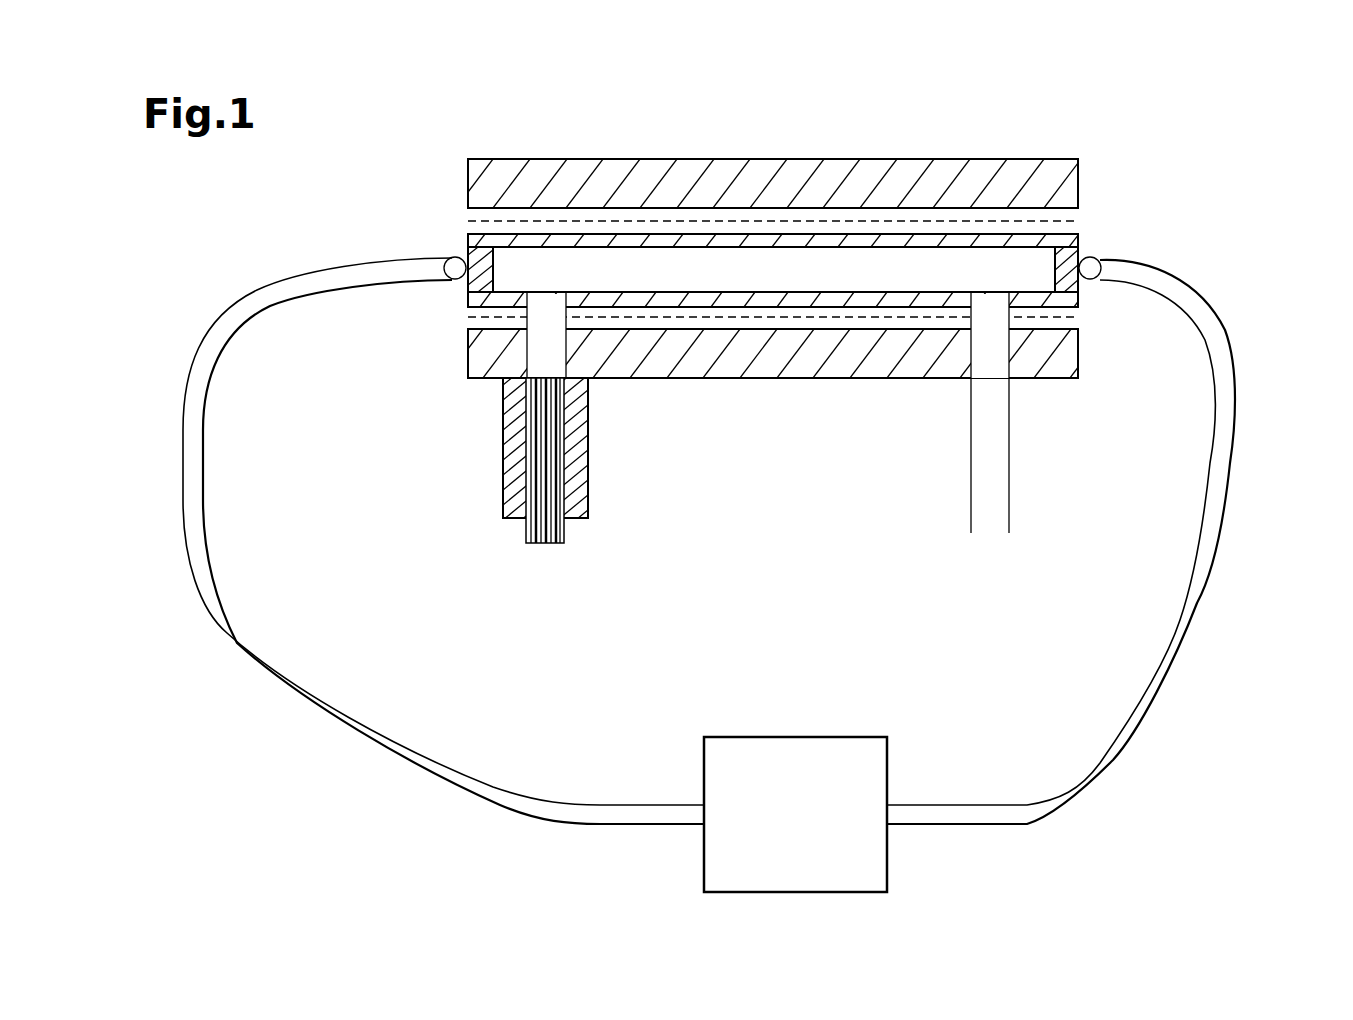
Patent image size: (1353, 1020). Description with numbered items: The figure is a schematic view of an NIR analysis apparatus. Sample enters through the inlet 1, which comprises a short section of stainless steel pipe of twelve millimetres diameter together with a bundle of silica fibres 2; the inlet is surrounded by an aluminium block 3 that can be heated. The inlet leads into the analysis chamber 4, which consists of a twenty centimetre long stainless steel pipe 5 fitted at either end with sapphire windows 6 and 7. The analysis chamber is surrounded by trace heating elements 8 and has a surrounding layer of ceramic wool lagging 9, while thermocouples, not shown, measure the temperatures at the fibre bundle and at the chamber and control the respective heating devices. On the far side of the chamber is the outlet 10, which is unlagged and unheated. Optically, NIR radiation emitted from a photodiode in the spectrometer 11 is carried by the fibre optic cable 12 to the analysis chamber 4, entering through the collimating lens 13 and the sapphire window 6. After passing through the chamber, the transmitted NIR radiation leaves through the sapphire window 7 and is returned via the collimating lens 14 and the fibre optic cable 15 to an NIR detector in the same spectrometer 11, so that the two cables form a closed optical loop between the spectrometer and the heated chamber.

The inlet 1 is at (491, 467).
The bundle of silica fibres 2 is at (548, 513).
The aluminium block 3 is at (582, 472).
The analysis chamber 4 is at (737, 150).
The stainless steel pipe 5 is at (813, 240).
The sapphire window 6 is at (470, 247).
The sapphire window 7 is at (1067, 260).
The trace heating elements 8 is at (868, 320).
The ceramic wool lagging 9 is at (710, 355).
The outlet 10 is at (1030, 465).
The spectrometer 11 is at (787, 775).
The fibre optic cable 12 is at (186, 440).
The collimating lens 13 is at (453, 275).
The collimating lens 14 is at (1090, 278).
The fibre optic cable 15 is at (1193, 597).